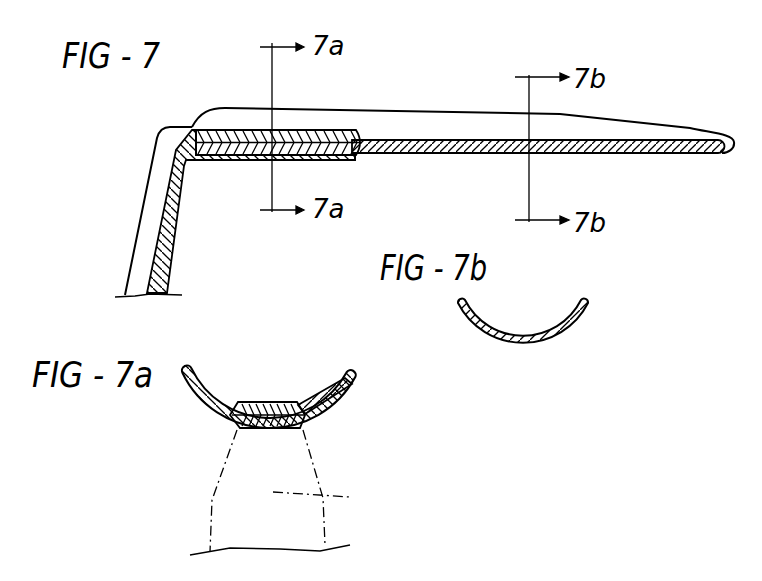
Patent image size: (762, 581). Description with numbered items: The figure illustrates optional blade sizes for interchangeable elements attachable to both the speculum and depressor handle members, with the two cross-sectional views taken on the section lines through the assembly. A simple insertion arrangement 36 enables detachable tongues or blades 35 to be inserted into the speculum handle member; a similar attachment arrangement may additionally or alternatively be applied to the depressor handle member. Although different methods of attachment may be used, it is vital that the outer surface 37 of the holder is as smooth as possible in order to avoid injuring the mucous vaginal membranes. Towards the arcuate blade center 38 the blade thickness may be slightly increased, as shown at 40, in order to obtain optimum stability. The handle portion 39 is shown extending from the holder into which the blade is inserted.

In FIG. 7, the tongues or blades 35 is at (442, 140).
In FIG. 7, the insertion arrangement 36 is at (315, 150).
In FIG. 7, the outer surface of the holder 37 is at (240, 158).
In FIG. 7B, the outer surface of the holder 37 is at (523, 321).
In FIG. 7A, the outer surface of the holder 37 is at (267, 428).
In FIG. 7, the arcuate blade center 38 is at (320, 130).
In FIG. 7A, the arcuate blade center 38 is at (275, 402).
In FIG. 7, the handle 39 is at (147, 246).
In FIG. 7A, the handle 39 is at (350, 497).
In FIG. 7A, the increased blade thickness 40 is at (307, 398).